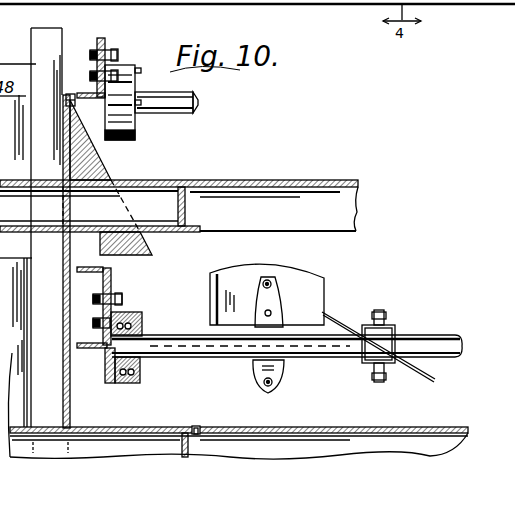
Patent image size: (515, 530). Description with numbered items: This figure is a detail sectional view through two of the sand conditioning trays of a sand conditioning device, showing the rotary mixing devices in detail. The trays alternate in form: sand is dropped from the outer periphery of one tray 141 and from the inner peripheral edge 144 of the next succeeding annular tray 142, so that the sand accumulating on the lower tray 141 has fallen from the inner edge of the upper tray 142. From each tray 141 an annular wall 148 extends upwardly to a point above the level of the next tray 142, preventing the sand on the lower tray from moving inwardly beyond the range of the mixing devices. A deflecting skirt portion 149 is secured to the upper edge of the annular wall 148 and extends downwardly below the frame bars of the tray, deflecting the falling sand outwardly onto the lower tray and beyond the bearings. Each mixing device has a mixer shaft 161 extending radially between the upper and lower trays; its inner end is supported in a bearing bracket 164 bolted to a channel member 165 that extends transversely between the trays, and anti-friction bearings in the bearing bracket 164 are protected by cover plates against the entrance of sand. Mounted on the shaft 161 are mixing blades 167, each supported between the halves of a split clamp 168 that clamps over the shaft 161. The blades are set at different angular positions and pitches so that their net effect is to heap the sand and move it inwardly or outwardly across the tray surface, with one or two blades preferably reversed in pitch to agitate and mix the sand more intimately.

The tray 141 is at (489, 405).
The second tray 142 is at (333, 178).
The inner peripheral edge 144 is at (182, 180).
The annular wall 148 is at (68, 267).
The deflecting skirt portion 149 is at (110, 174).
The mixer shaft 161 is at (198, 108).
The bearing bracket 164 is at (120, 140).
The channel member 165 is at (106, 43).
The mixing blade 167 is at (323, 313).
The split clamp 168 is at (284, 367).